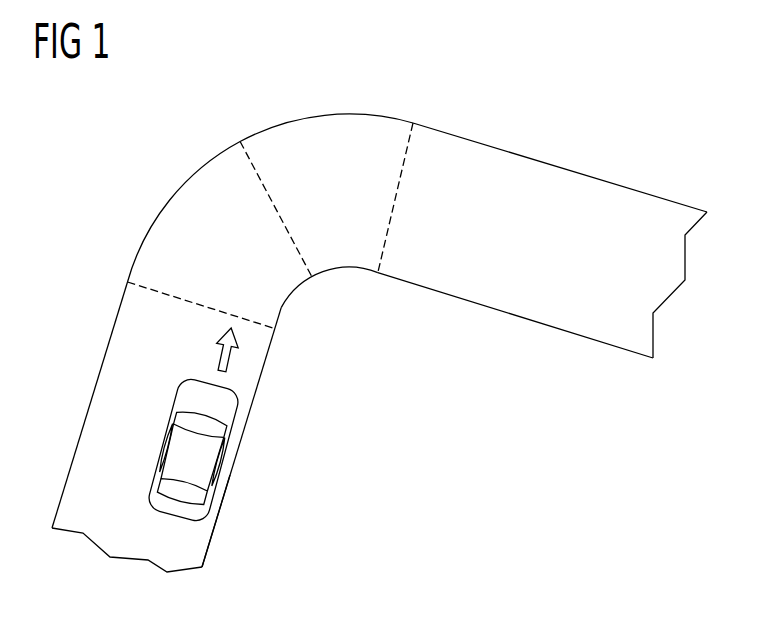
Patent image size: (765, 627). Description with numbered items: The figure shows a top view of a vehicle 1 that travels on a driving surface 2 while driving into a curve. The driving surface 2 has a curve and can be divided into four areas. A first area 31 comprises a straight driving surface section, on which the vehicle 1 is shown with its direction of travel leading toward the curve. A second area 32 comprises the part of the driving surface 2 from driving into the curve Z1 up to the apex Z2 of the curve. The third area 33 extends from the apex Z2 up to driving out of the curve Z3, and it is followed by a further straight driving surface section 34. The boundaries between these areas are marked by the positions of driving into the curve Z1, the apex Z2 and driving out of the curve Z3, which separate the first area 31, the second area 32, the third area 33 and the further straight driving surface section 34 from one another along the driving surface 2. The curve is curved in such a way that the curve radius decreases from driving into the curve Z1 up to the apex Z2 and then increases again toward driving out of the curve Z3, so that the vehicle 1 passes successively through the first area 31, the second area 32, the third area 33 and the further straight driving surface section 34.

The vehicle 1 is at (193, 386).
The driving surface 2 is at (198, 546).
The first area 31 is at (108, 399).
The second area 32 is at (195, 188).
The third area 33 is at (310, 132).
The further straight driving surface section 34 is at (511, 168).
The driving into a curve Z1 is at (221, 316).
The apex of the curve Z2 is at (289, 229).
The driving out of the curve Z3 is at (388, 220).